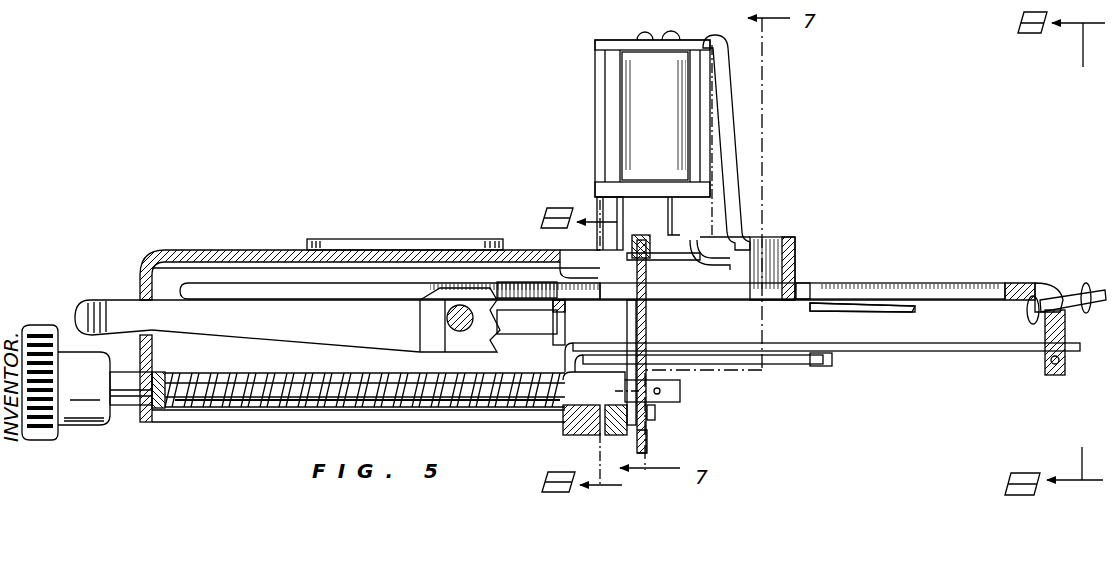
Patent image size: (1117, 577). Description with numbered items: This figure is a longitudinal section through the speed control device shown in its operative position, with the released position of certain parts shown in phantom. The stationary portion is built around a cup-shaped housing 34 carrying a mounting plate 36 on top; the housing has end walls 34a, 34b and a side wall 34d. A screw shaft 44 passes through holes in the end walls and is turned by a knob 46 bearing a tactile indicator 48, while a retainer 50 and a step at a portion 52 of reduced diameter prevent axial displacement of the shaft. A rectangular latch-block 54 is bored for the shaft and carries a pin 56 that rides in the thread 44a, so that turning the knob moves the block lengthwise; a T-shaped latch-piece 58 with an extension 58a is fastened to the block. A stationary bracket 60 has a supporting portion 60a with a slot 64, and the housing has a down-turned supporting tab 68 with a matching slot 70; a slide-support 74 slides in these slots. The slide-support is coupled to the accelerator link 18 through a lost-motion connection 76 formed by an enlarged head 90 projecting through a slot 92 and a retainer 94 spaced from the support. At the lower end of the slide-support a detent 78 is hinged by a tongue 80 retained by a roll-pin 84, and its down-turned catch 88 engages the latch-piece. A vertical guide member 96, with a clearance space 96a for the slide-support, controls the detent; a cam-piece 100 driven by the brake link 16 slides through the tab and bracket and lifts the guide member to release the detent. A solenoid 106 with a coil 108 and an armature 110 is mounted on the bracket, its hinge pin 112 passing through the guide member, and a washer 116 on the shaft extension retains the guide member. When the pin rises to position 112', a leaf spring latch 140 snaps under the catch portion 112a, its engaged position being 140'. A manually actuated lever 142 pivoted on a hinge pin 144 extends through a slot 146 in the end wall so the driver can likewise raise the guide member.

The link 16 is at (905, 315).
The link 18 is at (1100, 298).
The cup-shaped housing 34 is at (195, 250).
The end wall 34a is at (145, 424).
The end wall 34b is at (625, 325).
The side wall 34d is at (440, 418).
The mounting plate 36 is at (385, 246).
The screw shaft 44 is at (270, 408).
The thread 44a is at (308, 422).
The knob 46 is at (35, 440).
The tactile indicator 48 is at (46, 325).
The retainer 50 is at (160, 410).
The portion of reduced diameter 52 is at (682, 388).
The latch-block 54 is at (580, 436).
The pin 56 is at (608, 436).
The latch-piece 58 is at (720, 372).
The extension 58a is at (832, 362).
The stationary bracket 60 is at (775, 237).
The supporting portion 60a is at (797, 250).
The slot 64 is at (812, 286).
The down-turned supporting tab 68 is at (550, 262).
The slot 70 is at (540, 310).
The slide-support 74 is at (870, 290).
The lost-motion connection 76 is at (1063, 290).
The detent 78 is at (920, 352).
The tongue 80 is at (1050, 375).
The roll-pin 84 is at (1050, 360).
The catch 88 is at (560, 356).
The enlarged head 90 is at (1027, 312).
The slot 92 is at (1040, 283).
The retainer 94 is at (1086, 315).
The guide member 96 is at (648, 446).
The clearance space 96a is at (646, 314).
The cam-piece 100 is at (232, 287).
The solenoid 106 is at (592, 77).
The coil 108 is at (620, 90).
The armature 110 is at (605, 205).
The hinge pin 112 is at (663, 269).
The raised position of hinge pin 112' is at (647, 196).
The catch portion 112a is at (712, 270).
The washer 116 is at (656, 413).
The leaf spring latch 140 is at (761, 142).
The latched position of leaf spring latch 140' is at (662, 140).
The manually actuated lever 142 is at (110, 305).
The hinge pin 144 is at (448, 318).
The slot 146 is at (150, 345).